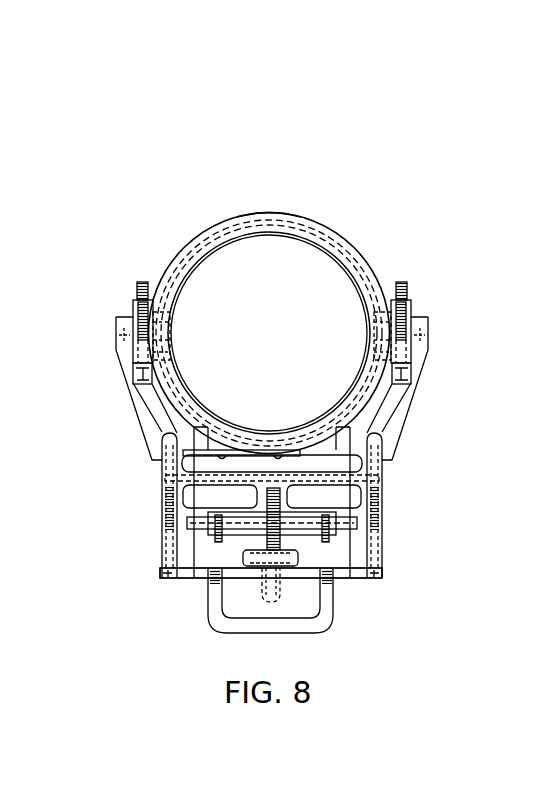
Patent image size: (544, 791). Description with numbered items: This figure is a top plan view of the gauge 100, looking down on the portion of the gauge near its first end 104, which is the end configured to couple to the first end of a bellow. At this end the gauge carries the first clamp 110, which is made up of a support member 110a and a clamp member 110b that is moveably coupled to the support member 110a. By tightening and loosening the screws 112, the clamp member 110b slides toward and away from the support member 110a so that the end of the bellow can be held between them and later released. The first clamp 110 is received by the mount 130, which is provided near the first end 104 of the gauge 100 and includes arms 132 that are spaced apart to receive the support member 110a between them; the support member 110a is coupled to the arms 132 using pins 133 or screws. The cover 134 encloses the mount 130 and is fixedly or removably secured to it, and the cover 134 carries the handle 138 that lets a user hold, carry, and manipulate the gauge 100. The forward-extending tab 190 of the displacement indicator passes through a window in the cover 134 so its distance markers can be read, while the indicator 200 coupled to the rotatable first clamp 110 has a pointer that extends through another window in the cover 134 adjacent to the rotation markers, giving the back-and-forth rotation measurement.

The gauge 100 is at (305, 100).
The first end 104 is at (453, 358).
The first clamp 110 is at (359, 196).
The support member 110a is at (176, 370).
The clamp member 110b is at (272, 212).
The screws 112 is at (138, 287).
The mount 130 is at (376, 452).
The arms 132 is at (126, 397).
The pins 133 is at (428, 330).
The cover 134 is at (347, 570).
The handle 138 is at (226, 623).
The tab 190 is at (272, 593).
The indicator 200 is at (240, 451).